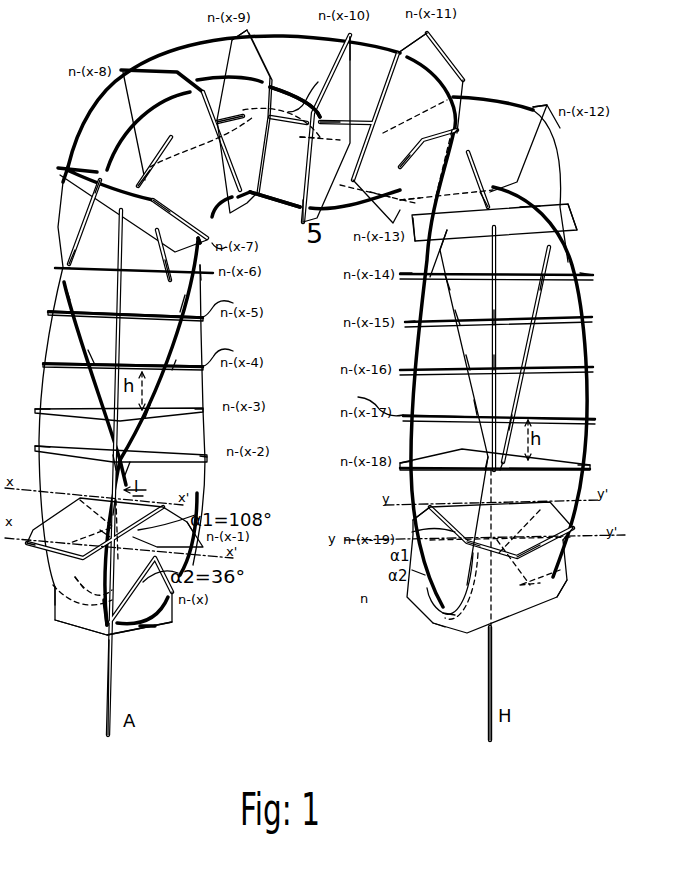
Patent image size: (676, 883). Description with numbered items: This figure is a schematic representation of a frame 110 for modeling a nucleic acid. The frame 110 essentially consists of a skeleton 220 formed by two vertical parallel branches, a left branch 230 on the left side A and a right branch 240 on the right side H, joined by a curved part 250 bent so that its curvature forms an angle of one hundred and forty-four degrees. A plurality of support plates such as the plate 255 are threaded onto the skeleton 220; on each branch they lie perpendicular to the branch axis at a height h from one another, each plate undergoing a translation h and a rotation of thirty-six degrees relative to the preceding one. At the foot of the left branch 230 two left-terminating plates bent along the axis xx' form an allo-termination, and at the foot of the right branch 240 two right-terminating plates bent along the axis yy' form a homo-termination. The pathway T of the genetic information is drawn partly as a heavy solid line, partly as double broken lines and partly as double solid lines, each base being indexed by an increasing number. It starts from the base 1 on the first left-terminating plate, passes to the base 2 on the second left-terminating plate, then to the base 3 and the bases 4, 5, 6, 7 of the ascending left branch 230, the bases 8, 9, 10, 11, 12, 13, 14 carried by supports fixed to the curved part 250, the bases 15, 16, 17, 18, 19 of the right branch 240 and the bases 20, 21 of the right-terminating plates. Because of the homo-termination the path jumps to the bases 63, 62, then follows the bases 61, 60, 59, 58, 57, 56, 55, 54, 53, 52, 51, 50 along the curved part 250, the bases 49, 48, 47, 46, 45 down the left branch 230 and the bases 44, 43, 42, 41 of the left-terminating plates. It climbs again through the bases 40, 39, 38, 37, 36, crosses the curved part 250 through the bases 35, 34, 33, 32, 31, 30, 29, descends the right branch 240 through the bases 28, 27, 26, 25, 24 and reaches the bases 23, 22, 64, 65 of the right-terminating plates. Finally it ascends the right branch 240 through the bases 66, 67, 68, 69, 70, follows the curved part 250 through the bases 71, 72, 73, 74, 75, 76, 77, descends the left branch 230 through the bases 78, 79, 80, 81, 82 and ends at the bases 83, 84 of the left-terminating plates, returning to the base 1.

The base 1 is at (112, 606).
The base 2 is at (100, 535).
The base 3 is at (135, 459).
The base 4 is at (153, 410).
The base 5 is at (174, 357).
The base 6 is at (173, 303).
The base 7 is at (201, 265).
The base 8 is at (191, 237).
The base 9 is at (225, 187).
The base 10 is at (246, 184).
The base 11 is at (315, 205).
The base 12 is at (380, 190).
The base 13 is at (494, 187).
The base 14 is at (530, 218).
The base 15 is at (581, 265).
The base 16 is at (586, 306).
The base 17 is at (586, 357).
The base 18 is at (591, 409).
The base 19 is at (589, 458).
The base 20 is at (579, 524).
The base 21 is at (570, 584).
The base 22 is at (430, 622).
The base 23 is at (424, 521).
The base 24 is at (402, 453).
The base 25 is at (405, 408).
The base 26 is at (406, 360).
The base 27 is at (408, 311).
The base 28 is at (412, 265).
The base 29 is at (449, 231).
The base 30 is at (464, 130).
The base 31 is at (414, 47).
The base 32 is at (350, 50).
The base 33 is at (241, 43).
The base 34 is at (131, 83).
The base 35 is at (58, 158).
The base 36 is at (52, 254).
The base 37 is at (78, 297).
The base 38 is at (99, 354).
The base 39 is at (93, 405).
The base 40 is at (106, 455).
The base 41 is at (126, 513).
The base 42 is at (87, 588).
The base 43 is at (65, 593).
The base 44 is at (44, 535).
The base 45 is at (49, 440).
The base 46 is at (50, 403).
The base 47 is at (58, 353).
The base 48 is at (51, 303).
The base 49 is at (82, 254).
The base 50 is at (88, 182).
The base 51 is at (186, 104).
The base 52 is at (259, 90).
The base 53 is at (332, 115).
The base 54 is at (393, 160).
The base 55 is at (416, 205).
The base 56 is at (424, 227).
The base 57 is at (455, 273).
The base 58 is at (465, 312).
The base 59 is at (474, 360).
The base 60 is at (466, 408).
The base 61 is at (477, 459).
The base 62 is at (526, 534).
The base 63 is at (523, 578).
The base 64 is at (453, 599).
The base 65 is at (471, 532).
The base 66 is at (510, 459).
The base 67 is at (521, 413).
The base 68 is at (505, 360).
The base 69 is at (505, 312).
The base 70 is at (534, 273).
The base 71 is at (567, 218).
The base 72 is at (534, 118).
The base 73 is at (452, 88).
The base 74 is at (322, 147).
The base 75 is at (233, 138).
The base 76 is at (157, 181).
The base 77 is at (167, 219).
The base 78 is at (157, 263).
The base 79 is at (193, 307).
The base 80 is at (205, 355).
The base 81 is at (206, 399).
The base 82 is at (208, 448).
The base 83 is at (182, 534).
The base 84 is at (149, 607).
The frame 110 is at (290, 229).
The skeleton 220 is at (176, 665).
The left vertical branch 230 is at (108, 682).
The right vertical branch 240 is at (515, 666).
The curved part 250 is at (318, 82).
The support plate 255 is at (319, 349).